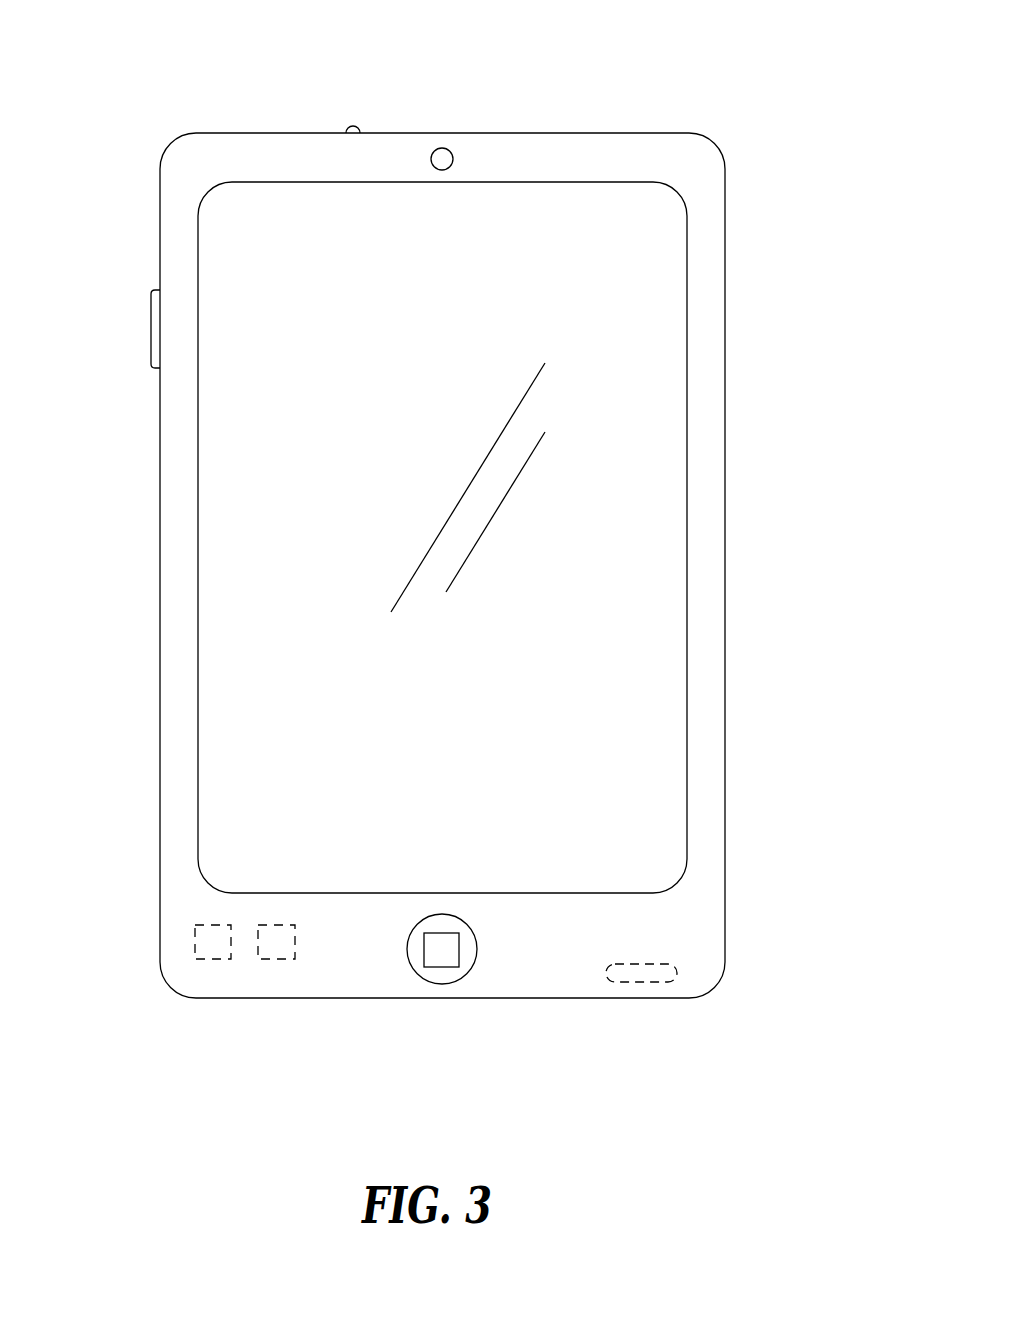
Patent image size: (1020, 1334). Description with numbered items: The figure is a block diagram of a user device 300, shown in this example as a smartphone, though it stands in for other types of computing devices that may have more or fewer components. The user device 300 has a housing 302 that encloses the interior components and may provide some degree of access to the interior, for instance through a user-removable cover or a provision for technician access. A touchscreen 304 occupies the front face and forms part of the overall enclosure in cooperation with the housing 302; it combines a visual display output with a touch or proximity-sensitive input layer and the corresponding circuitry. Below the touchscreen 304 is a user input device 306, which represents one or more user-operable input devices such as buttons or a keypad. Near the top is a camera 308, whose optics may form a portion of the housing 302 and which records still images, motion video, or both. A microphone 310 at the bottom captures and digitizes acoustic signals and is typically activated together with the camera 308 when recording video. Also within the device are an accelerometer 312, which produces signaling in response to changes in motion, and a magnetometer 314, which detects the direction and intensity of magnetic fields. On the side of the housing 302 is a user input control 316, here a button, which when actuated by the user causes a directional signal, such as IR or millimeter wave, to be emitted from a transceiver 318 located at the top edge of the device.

The user device 300 is at (578, 42).
The housing 302 is at (725, 268).
The touchscreen 304 is at (551, 278).
The user input device 306 is at (477, 938).
The camera 308 is at (442, 148).
The microphone 310 is at (657, 982).
The accelerometer 312 is at (215, 959).
The magnetometer 314 is at (280, 959).
The user input control 316 is at (151, 300).
The transceiver 318 is at (353, 126).